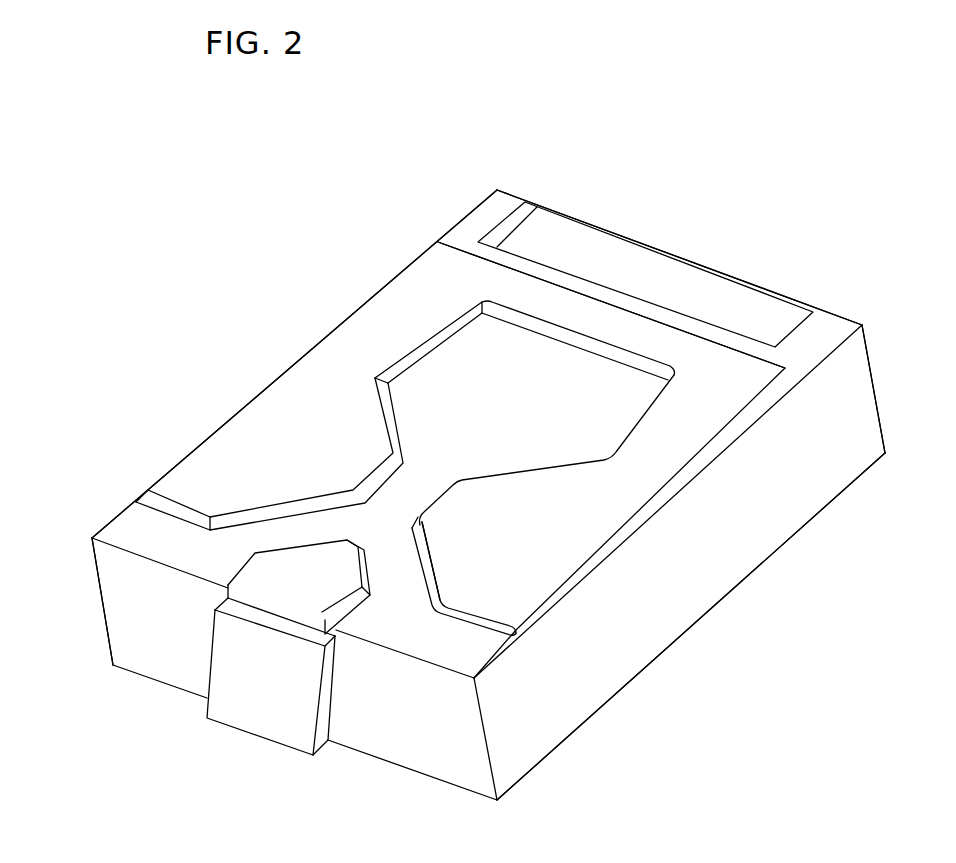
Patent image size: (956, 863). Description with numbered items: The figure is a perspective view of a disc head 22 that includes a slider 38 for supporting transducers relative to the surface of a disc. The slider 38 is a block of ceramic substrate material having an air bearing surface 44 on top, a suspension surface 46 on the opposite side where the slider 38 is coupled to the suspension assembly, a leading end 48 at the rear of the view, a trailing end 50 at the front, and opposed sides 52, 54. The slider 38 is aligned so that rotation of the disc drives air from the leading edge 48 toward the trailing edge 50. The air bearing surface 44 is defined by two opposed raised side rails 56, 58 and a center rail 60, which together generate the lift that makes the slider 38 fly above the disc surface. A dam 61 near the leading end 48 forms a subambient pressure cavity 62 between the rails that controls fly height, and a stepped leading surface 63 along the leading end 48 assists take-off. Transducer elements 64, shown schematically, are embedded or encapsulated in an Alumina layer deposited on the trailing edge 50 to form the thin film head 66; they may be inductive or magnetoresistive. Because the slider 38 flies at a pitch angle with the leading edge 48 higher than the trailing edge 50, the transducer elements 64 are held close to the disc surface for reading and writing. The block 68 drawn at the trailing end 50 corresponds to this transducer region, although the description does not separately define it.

The disc head 22 is at (684, 207).
The slider 38 is at (830, 313).
The air bearing surface 44 is at (457, 277).
The suspension surface 46 is at (712, 613).
The leading end 48 is at (733, 277).
The trailing end 50 is at (117, 617).
The side 52 is at (245, 402).
The side 54 is at (787, 503).
The raised side rail 56 is at (269, 454).
The raised side rail 58 is at (471, 576).
The center rail 60 is at (299, 587).
The dam 61 is at (567, 308).
The subambient pressure cavity 62 is at (547, 450).
The stepped leading surface 63 is at (548, 228).
The transducer elements 64 is at (325, 635).
The thin film head 66 is at (277, 632).
The protruding block 68 is at (243, 690).